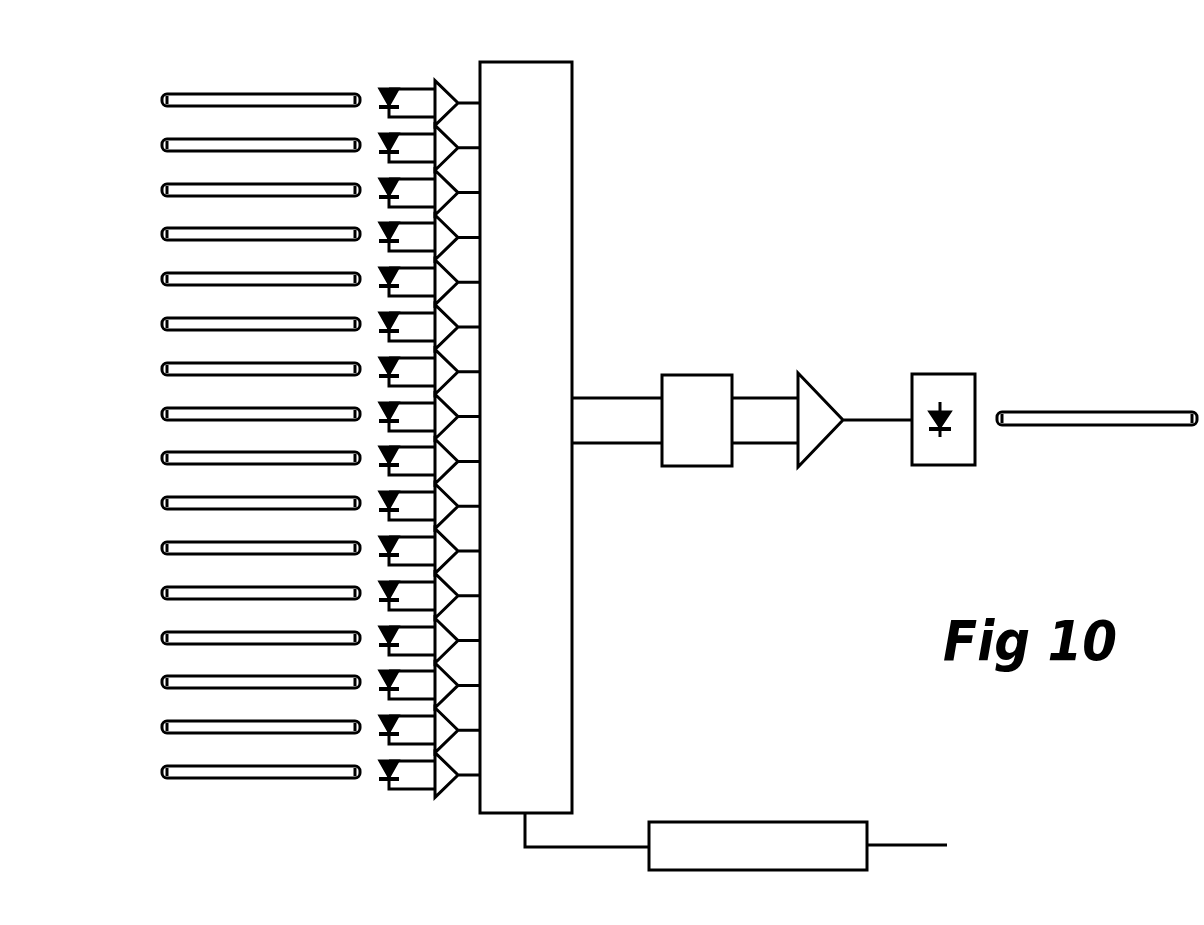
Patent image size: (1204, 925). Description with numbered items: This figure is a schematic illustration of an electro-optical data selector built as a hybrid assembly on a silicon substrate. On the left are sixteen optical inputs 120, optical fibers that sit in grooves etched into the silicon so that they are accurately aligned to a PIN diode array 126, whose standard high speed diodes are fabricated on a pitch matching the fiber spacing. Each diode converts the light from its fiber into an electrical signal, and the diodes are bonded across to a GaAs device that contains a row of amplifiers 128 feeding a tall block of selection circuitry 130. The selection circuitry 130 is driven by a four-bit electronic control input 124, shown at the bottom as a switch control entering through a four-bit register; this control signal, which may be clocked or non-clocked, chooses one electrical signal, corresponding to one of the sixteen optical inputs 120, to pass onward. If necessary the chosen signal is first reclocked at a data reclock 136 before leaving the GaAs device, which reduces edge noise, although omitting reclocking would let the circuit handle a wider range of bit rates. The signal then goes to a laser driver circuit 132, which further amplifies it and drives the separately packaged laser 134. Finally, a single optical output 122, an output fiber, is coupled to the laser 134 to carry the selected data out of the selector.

The optical inputs 120 is at (242, 96).
The optical output 122 is at (1070, 412).
The 4-bit electronic control input 124 is at (910, 845).
The PIN diode array 126 is at (386, 92).
The amplifiers 128 is at (438, 87).
The selection circuitry 130 is at (572, 130).
The laser driver circuit 132 is at (822, 440).
The laser 134 is at (933, 374).
The data reclock 136 is at (683, 375).